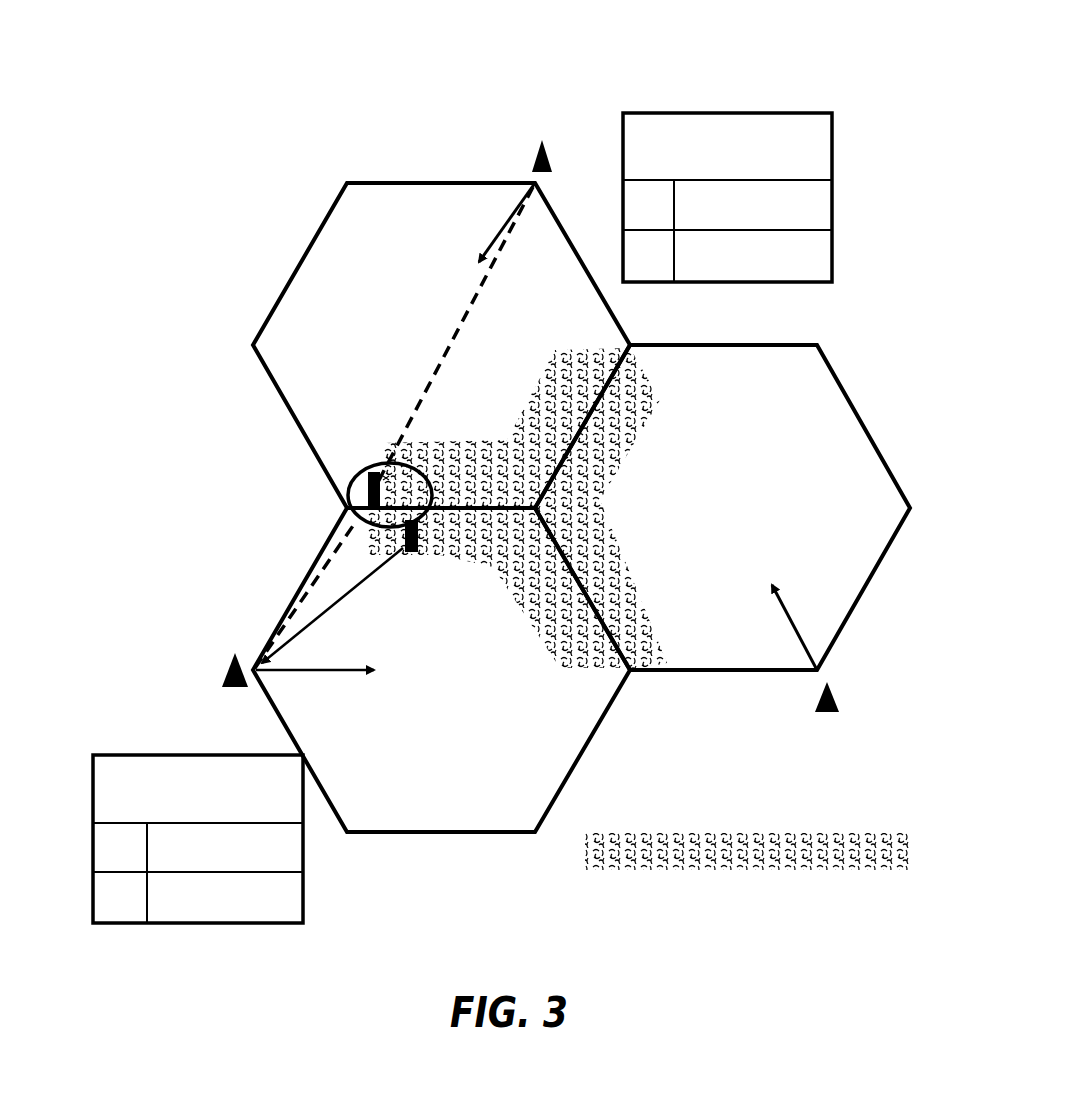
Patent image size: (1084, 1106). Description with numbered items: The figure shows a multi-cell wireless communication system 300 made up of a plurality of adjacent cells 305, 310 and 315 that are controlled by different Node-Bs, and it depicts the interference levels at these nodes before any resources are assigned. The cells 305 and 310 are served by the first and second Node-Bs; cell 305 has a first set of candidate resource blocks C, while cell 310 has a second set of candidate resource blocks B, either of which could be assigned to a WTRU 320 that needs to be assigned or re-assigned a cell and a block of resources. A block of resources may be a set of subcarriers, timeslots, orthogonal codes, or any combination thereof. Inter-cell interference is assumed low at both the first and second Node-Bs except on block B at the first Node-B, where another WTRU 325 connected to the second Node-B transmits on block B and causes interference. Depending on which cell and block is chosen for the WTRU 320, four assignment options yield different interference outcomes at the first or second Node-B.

The multi-cell wireless communication system 300 is at (497, 464).
The cell 305 is at (280, 298).
The cell 310 is at (300, 585).
The cell 315 is at (850, 400).
The WTRU 320 is at (350, 490).
The WTRU 325 is at (413, 553).